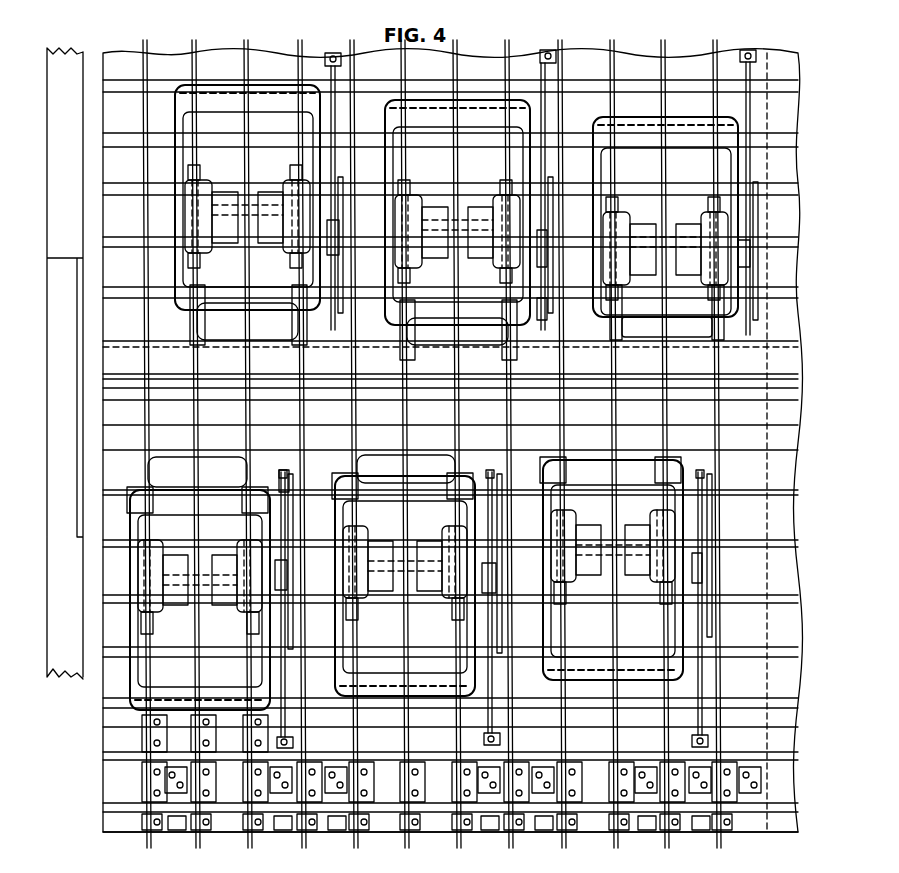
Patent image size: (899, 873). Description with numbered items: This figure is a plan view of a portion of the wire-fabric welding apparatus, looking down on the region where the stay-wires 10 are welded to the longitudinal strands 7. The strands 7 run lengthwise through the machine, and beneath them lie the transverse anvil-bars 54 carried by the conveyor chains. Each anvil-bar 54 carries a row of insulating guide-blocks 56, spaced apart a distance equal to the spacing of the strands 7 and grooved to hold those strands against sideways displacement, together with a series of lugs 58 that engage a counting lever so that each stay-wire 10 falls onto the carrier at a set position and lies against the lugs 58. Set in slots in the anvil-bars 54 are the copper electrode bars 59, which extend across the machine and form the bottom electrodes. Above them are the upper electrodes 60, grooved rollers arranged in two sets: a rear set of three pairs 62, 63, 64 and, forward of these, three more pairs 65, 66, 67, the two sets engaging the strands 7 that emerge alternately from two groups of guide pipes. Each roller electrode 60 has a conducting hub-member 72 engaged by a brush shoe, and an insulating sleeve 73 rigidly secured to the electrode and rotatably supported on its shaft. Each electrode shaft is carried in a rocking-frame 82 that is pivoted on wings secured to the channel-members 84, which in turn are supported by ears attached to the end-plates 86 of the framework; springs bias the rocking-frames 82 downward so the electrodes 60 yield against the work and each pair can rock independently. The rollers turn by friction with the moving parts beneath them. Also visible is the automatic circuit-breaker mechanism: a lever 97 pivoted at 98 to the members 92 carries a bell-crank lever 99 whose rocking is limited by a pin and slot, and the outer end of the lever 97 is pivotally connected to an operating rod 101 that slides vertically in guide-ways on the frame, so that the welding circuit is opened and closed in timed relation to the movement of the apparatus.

The strands 7 is at (445, 833).
The stay-wires 10 is at (233, 760).
The anvil-bars 54 is at (118, 733).
The guide-blocks 56 is at (140, 785).
The lugs 58 is at (289, 830).
The electrode bars 59 is at (113, 762).
The upper electrodes 60 is at (200, 170).
The rear electrode pair 62 is at (243, 622).
The rear electrode pair 63 is at (450, 616).
The rear electrode pair 64 is at (650, 612).
The forward electrode pair 65 is at (295, 256).
The forward electrode pair 66 is at (498, 268).
The forward electrode pair 67 is at (712, 302).
The hub-member 72 is at (435, 205).
The sleeve 73 is at (645, 255).
The rocking-frames 82 is at (415, 108).
The channel-members 84 is at (160, 441).
The end-plates 86 is at (103, 372).
The members 92 is at (510, 325).
The lever 97 is at (340, 108).
The pivot 98 is at (548, 304).
The bell-crank lever 99 is at (340, 262).
The operating rod 101 is at (333, 53).